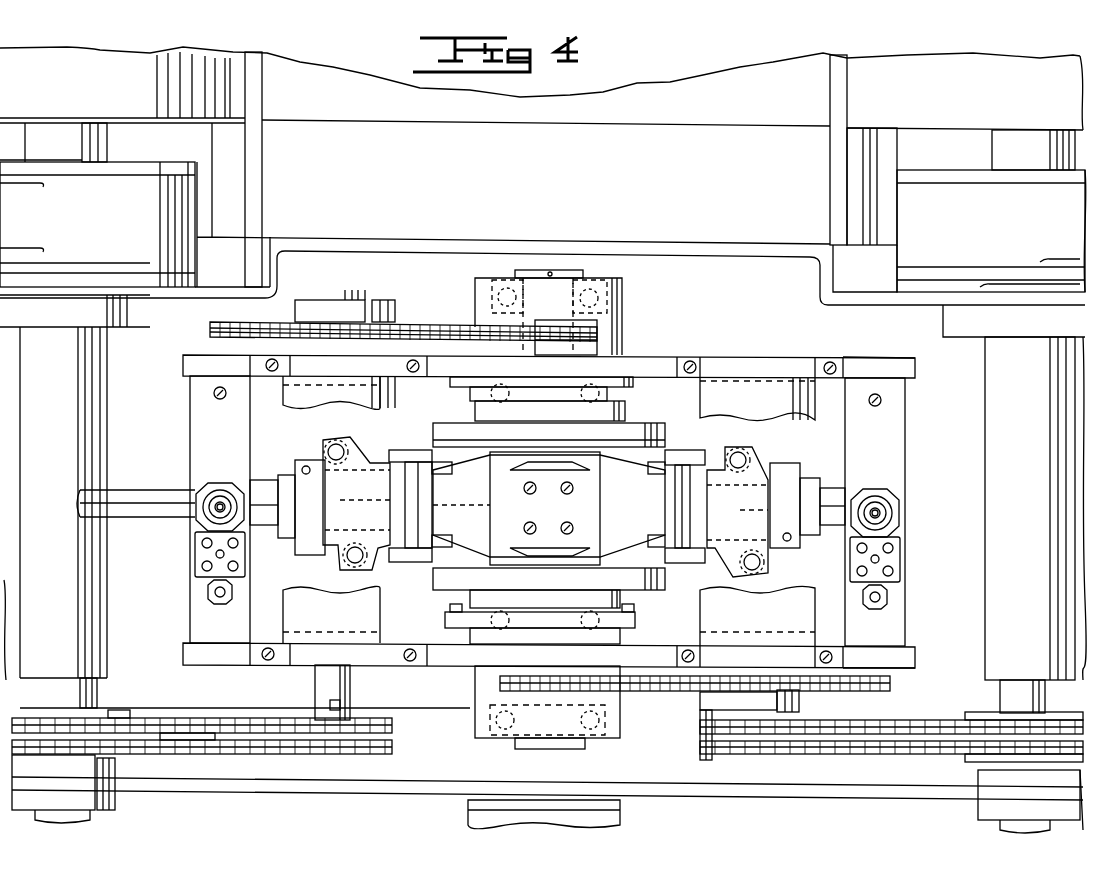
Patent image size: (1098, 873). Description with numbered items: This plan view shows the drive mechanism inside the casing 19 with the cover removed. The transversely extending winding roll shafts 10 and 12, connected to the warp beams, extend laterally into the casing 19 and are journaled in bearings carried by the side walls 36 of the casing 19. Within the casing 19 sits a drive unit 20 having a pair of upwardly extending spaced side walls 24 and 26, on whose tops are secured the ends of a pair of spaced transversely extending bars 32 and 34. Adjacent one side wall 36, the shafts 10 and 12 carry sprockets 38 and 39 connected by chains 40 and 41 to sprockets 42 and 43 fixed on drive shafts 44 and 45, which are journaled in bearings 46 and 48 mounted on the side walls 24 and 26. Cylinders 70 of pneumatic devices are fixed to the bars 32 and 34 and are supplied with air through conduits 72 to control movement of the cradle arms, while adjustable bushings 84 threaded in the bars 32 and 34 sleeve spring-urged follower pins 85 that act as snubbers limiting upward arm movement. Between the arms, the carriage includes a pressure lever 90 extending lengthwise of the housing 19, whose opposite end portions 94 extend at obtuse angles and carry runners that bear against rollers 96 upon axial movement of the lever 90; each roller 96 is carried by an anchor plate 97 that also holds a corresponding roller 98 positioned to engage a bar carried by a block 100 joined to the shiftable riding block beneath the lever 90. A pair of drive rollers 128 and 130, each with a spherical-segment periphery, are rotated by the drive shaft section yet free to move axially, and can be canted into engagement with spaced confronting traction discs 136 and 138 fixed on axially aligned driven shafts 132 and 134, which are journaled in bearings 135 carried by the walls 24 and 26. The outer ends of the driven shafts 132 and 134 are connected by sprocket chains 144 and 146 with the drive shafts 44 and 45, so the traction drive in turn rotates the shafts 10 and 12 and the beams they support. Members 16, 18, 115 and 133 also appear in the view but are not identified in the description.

The winding roll shaft 10 is at (95, 150).
The winding roll shaft 12 is at (998, 146).
The column 16 is at (225, 209).
The upright bar 18 is at (264, 166).
The casing 19 is at (446, 802).
The drive unit 20 is at (732, 352).
The side wall 24 is at (878, 356).
The side wall 26 is at (905, 660).
The bar 32 is at (205, 422).
The bar 34 is at (897, 433).
The side wall of the casing 36 is at (735, 242).
The sprocket 38 is at (150, 735).
The sprocket 39 is at (983, 742).
The chain 40 is at (285, 755).
The chain 41 is at (880, 755).
The sprocket 42 is at (372, 755).
The sprocket 43 is at (720, 752).
The drive shaft 44 is at (322, 690).
The drive shaft 45 is at (800, 718).
The bearing 46 is at (305, 405).
The bearing 48 is at (765, 392).
The cylinder 70 is at (206, 585).
The conduit 72 is at (200, 553).
The adjustable bushing 84 is at (200, 495).
The follower pin 85 is at (210, 516).
The pressure lever 90 is at (657, 492).
The end portion 94 is at (330, 548).
The roller 96 is at (370, 556).
The anchor plate 97 is at (362, 470).
The roller 98 is at (352, 400).
The block 100 is at (300, 540).
The clamp plate 115 is at (562, 526).
The drive roller 128 is at (432, 490).
The drive roller 130 is at (549, 506).
The driven shaft 132 is at (550, 325).
The mounting block 133 is at (480, 690).
The driven shaft 134 is at (555, 698).
The bearing 135 is at (625, 340).
The traction disc 136 is at (645, 426).
The traction disc 138 is at (640, 594).
The sprocket chain 144 is at (425, 325).
The sprocket chain 146 is at (680, 695).